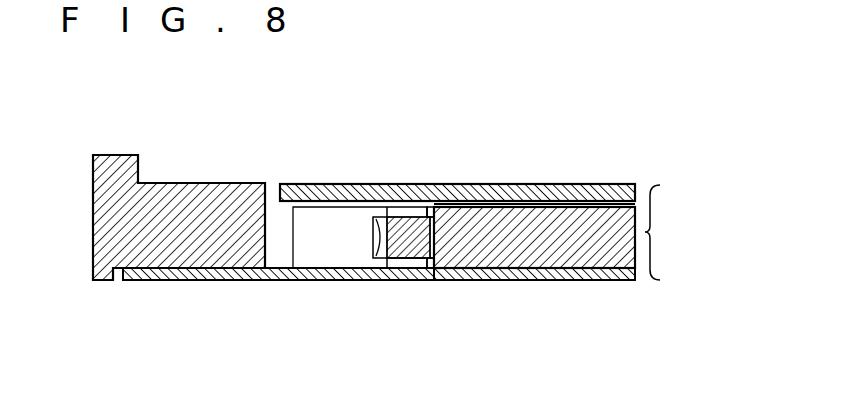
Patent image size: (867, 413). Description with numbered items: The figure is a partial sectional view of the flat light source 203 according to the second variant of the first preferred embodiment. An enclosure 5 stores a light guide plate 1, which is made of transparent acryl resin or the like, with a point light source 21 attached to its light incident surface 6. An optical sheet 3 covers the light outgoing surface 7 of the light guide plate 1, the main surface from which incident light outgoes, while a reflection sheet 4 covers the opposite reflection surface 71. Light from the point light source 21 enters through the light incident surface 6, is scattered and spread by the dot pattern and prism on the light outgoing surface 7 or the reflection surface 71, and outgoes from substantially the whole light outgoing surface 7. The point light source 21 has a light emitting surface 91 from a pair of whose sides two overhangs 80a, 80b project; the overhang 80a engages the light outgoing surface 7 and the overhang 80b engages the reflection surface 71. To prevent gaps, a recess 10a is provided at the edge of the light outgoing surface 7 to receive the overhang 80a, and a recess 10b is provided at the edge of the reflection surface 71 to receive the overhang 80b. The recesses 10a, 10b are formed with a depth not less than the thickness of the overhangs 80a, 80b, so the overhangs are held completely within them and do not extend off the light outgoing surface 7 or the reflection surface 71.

The light guide plate 1 is at (514, 270).
The optical sheet 3 is at (490, 184).
The reflection sheet 4 is at (555, 270).
The enclosure 5 is at (195, 266).
The light incident surface 6 is at (375, 268).
The light outgoing surface 7 is at (553, 203).
The recess 10a is at (423, 184).
The recess 10b is at (419, 270).
The point light source 21 is at (326, 254).
The reflection surface 71 is at (603, 270).
The overhang 80a is at (400, 184).
The overhang 80b is at (397, 270).
The light emitting surface 91 is at (366, 184).
The flat light source 203 is at (679, 232).